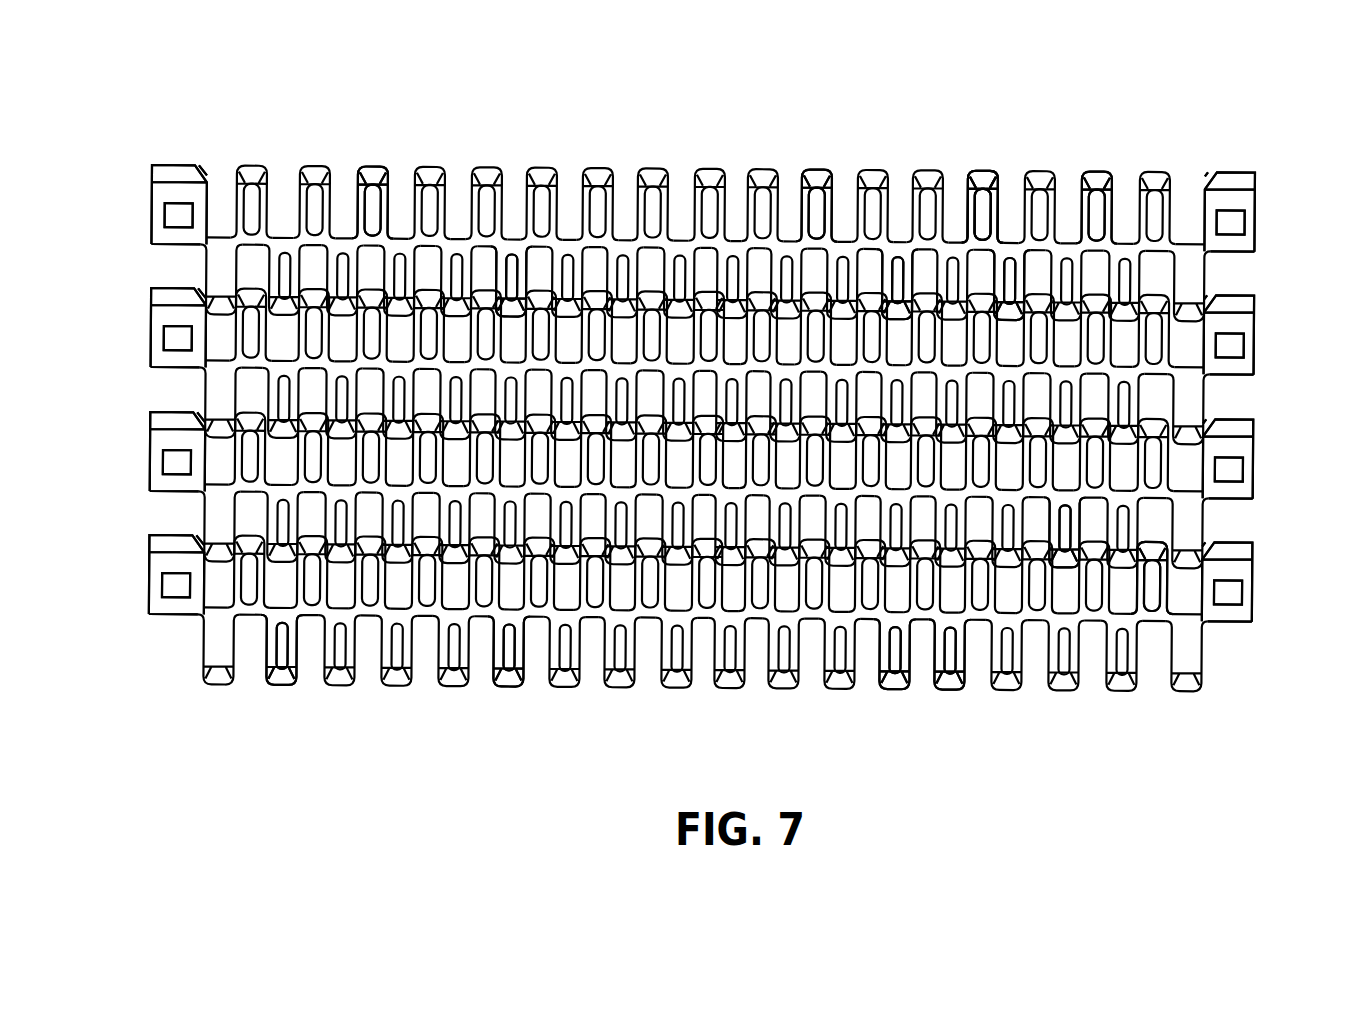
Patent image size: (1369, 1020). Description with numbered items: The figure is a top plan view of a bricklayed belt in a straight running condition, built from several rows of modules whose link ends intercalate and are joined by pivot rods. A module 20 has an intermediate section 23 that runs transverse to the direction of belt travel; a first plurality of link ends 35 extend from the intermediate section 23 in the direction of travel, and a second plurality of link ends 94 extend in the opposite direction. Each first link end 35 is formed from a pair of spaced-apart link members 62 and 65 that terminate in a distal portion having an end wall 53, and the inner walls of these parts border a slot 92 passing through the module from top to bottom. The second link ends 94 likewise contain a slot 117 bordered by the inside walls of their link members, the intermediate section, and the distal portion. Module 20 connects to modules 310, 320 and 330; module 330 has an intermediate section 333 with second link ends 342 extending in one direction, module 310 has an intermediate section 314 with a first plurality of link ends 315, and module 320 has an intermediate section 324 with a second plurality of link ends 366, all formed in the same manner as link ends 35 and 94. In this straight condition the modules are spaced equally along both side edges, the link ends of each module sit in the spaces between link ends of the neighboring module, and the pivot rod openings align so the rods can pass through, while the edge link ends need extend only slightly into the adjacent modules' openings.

The module 20 is at (1245, 185).
The intermediate section 23 is at (903, 246).
The first plurality of link ends 35 is at (815, 168).
The end wall 53 is at (985, 185).
The link member 62 is at (975, 180).
The link member 65 is at (1000, 200).
The slot 92 is at (1100, 205).
The second plurality of link ends 94 is at (1067, 560).
The slot 117 is at (1145, 557).
The module 310 is at (153, 238).
The intermediate section 314 is at (523, 243).
The first plurality of link ends 315 is at (372, 170).
The module 320 is at (153, 362).
The intermediate section 324 is at (497, 612).
The module 330 is at (1252, 357).
The intermediate section 333 is at (940, 610).
The second plurality of link ends 342 is at (895, 683).
The second plurality of link ends 366 is at (285, 683).